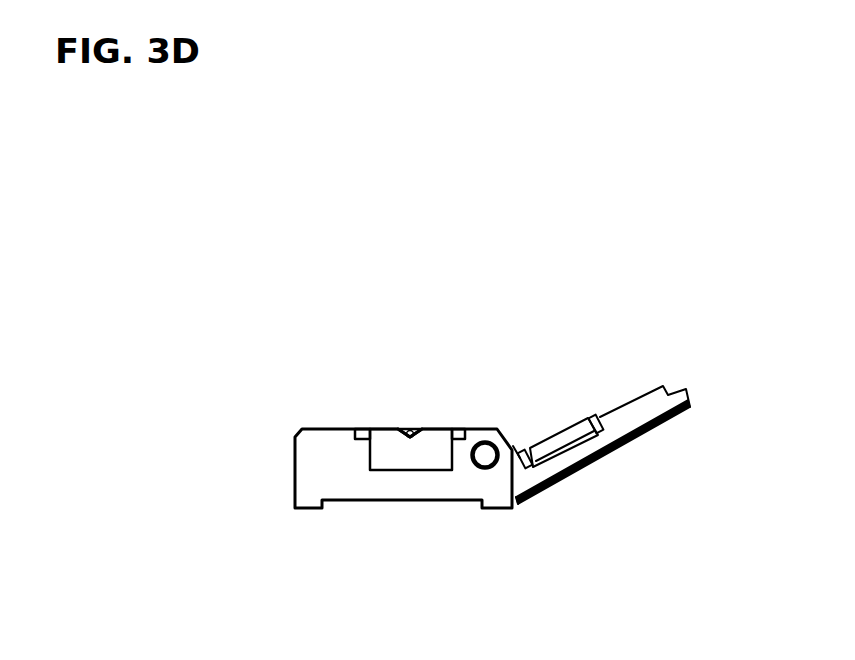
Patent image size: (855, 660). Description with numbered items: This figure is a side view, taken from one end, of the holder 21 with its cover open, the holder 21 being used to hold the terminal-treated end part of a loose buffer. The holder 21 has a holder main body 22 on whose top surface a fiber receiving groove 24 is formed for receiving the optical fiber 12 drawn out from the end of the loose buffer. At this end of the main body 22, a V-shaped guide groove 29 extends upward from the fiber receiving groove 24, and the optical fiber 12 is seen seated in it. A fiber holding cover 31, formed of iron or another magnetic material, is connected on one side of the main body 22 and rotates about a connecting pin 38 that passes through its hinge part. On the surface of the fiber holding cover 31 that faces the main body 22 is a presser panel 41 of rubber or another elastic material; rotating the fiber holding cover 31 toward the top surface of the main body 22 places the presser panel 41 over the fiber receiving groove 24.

The holder 21 is at (445, 374).
The holder main body 22 is at (356, 439).
The fiber receiving groove 24 is at (399, 501).
The V-shaped guide groove 29 is at (370, 363).
The optical fiber 12 is at (430, 364).
The connecting pin 38 is at (468, 524).
The fiber holding cover 31 is at (601, 472).
The presser panel 41 is at (561, 382).